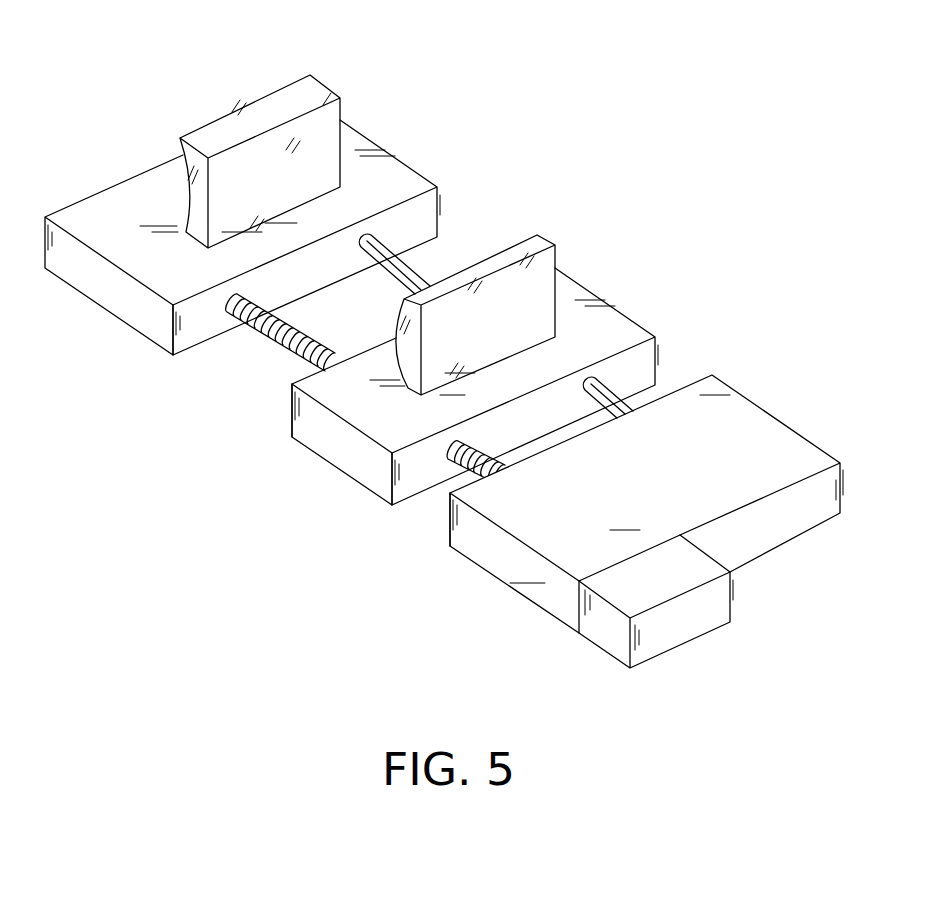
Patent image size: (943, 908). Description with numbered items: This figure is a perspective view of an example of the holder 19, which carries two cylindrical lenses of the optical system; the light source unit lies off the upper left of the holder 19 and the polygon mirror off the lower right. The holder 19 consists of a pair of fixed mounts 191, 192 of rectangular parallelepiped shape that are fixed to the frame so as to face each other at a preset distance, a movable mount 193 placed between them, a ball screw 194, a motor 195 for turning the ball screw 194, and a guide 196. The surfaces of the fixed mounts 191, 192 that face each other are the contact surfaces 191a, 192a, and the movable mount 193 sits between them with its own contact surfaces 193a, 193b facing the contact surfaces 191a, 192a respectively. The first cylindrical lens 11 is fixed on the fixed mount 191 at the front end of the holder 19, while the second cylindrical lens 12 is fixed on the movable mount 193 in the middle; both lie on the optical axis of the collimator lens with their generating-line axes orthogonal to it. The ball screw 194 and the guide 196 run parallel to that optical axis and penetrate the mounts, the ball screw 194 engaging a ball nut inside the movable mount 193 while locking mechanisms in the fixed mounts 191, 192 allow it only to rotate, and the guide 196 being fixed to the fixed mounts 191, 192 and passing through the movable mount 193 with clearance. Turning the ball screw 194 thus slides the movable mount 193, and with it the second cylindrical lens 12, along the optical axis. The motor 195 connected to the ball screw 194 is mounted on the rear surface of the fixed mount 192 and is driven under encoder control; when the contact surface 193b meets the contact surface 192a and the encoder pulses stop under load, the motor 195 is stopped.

The holder 19 is at (80, 171).
The first cylindrical lens 11 is at (243, 115).
The second cylindrical lens 12 is at (533, 295).
The fixed mount 191 is at (118, 297).
The contact surface 191a is at (195, 323).
The fixed mount 192 is at (522, 577).
The contact surface 192a is at (448, 530).
The movable mount 193 is at (338, 455).
The contact surface 193a is at (291, 408).
The contact surface 193b is at (381, 491).
The ball screw 194 is at (300, 332).
The motor 195 is at (680, 627).
The guide 196 is at (418, 267).